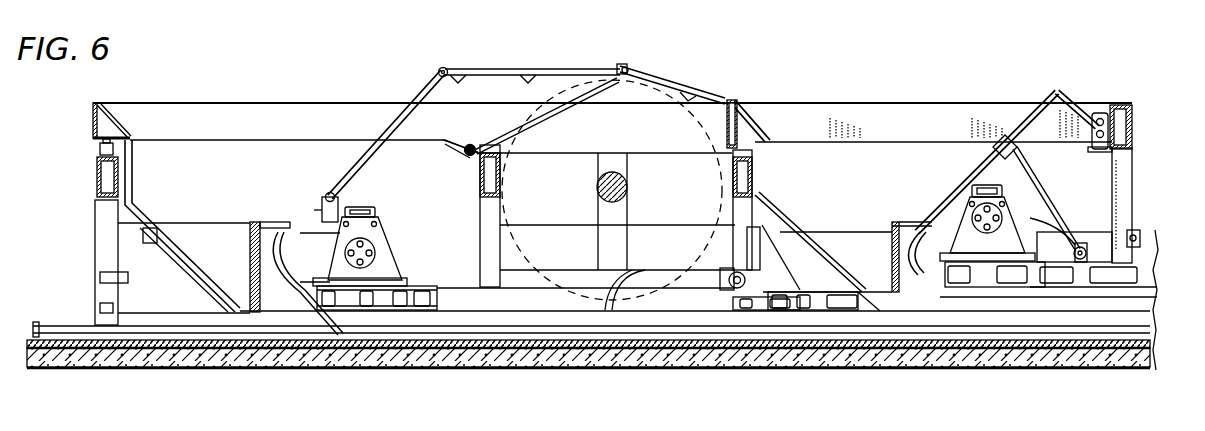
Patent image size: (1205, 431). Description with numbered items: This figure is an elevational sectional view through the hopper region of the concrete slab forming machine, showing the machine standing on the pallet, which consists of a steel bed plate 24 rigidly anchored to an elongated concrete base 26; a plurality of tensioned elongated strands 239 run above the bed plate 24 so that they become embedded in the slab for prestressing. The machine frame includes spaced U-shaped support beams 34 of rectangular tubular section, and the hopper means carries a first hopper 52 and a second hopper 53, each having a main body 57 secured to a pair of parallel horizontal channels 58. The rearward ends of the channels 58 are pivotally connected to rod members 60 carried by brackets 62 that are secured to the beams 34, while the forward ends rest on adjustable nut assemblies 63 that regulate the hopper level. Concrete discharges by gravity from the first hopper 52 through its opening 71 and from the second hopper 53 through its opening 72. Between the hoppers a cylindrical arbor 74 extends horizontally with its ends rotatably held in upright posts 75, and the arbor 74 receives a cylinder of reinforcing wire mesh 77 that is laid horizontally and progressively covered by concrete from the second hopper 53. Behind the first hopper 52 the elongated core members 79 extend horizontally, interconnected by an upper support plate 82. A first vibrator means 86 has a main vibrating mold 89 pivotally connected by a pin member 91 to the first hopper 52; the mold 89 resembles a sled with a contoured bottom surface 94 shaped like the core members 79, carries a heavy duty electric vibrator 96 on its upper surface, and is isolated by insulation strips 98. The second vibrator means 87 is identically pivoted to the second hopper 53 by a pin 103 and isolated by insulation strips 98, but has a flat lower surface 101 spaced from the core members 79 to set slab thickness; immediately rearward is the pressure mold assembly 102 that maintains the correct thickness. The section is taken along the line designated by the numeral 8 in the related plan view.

The first hopper 52 is at (158, 97).
The second hopper 53 is at (918, 104).
The main body 57 is at (358, 148).
The support channels 58 is at (458, 122).
The rod members 60 is at (470, 146).
The brackets 62 is at (512, 135).
The adjustable nut assemblies 63 is at (100, 148).
The reinforcing wire mesh 77 is at (731, 94).
The cylindrical arbor 74 is at (626, 178).
The upright posts 75 is at (618, 205).
The U-shaped support beams 34 is at (100, 222).
The section line 8 is at (420, 162).
The pin member 91 is at (330, 193).
The insulation strips 98 is at (268, 222).
The first vibrator means 86 is at (386, 207).
The electric vibrator 96 is at (380, 258).
The pin 103 is at (962, 190).
The second vibrator means 87 is at (1025, 210).
The pressure mold assembly 102 is at (1130, 232).
The discharge opening 72 is at (822, 265).
The elongated strands 239 is at (60, 325).
The discharge opening 71 is at (594, 283).
The upper support plate 82 is at (460, 308).
The lower surface 101 is at (960, 295).
The bed plate 24 is at (80, 365).
The concrete base 26 is at (578, 365).
The core members 79 is at (1128, 315).
The bottom contoured surface 94 is at (332, 355).
The main vibrating mold 89 is at (395, 313).